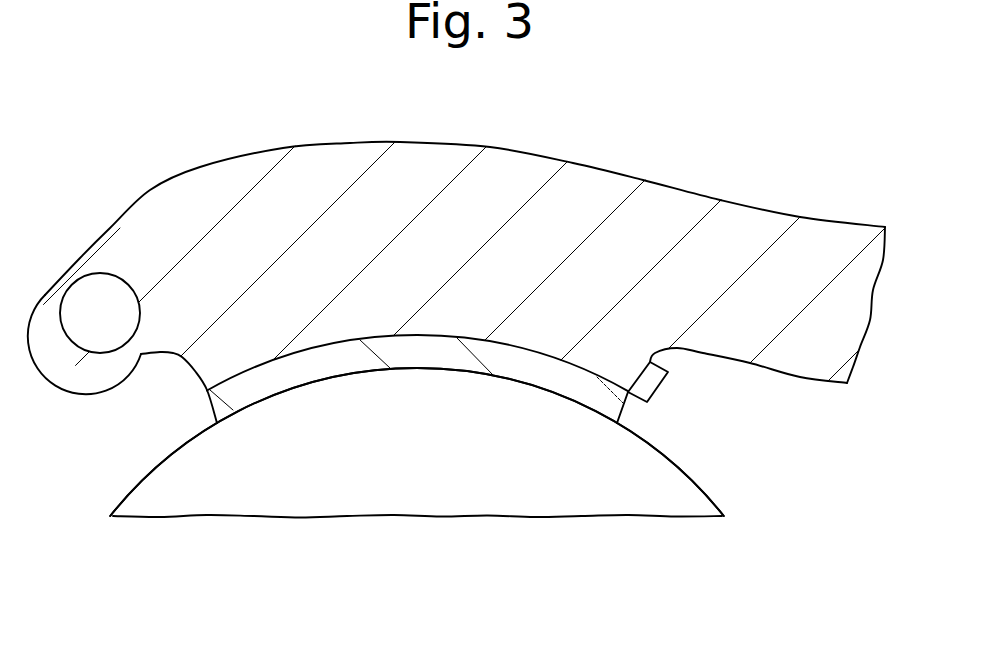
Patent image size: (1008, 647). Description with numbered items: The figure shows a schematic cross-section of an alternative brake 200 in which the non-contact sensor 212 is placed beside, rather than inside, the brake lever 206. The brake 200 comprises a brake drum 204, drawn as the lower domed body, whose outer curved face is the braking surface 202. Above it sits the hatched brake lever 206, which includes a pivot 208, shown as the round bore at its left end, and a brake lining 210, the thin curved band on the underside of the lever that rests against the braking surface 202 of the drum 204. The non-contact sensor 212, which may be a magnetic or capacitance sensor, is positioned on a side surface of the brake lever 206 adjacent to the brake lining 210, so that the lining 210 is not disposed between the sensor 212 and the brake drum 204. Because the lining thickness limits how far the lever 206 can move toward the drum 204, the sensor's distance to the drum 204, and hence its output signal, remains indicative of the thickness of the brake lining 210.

The brake 200 is at (853, 147).
The braking surface 202 is at (317, 381).
The brake drum 204 is at (187, 443).
The brake lever 206 is at (217, 200).
The pivot 208 is at (100, 290).
The brake lining 210 is at (343, 350).
The non-contact sensor 212 is at (655, 382).